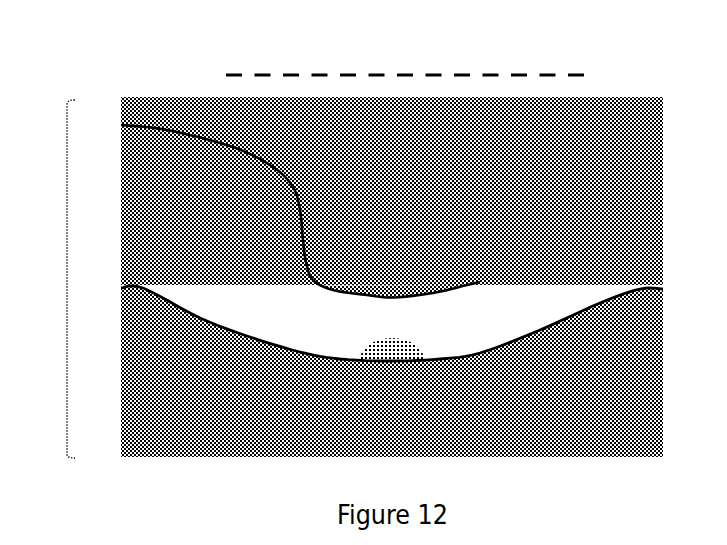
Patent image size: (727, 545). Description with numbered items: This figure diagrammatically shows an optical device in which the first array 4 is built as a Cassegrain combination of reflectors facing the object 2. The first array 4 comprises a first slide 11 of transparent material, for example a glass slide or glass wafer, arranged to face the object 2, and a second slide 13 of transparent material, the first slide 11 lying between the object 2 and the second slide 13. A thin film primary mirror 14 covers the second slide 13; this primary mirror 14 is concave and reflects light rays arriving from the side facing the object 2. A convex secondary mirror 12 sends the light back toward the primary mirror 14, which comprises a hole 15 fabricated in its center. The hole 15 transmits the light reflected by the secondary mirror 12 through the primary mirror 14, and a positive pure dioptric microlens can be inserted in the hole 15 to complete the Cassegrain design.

The object 2 is at (345, 73).
The first array 4 is at (67, 280).
The first slide 11 is at (153, 172).
The secondary mirror 12 is at (123, 126).
The second slide 13 is at (158, 342).
The primary mirror 14 is at (207, 322).
The hole 15 is at (400, 360).